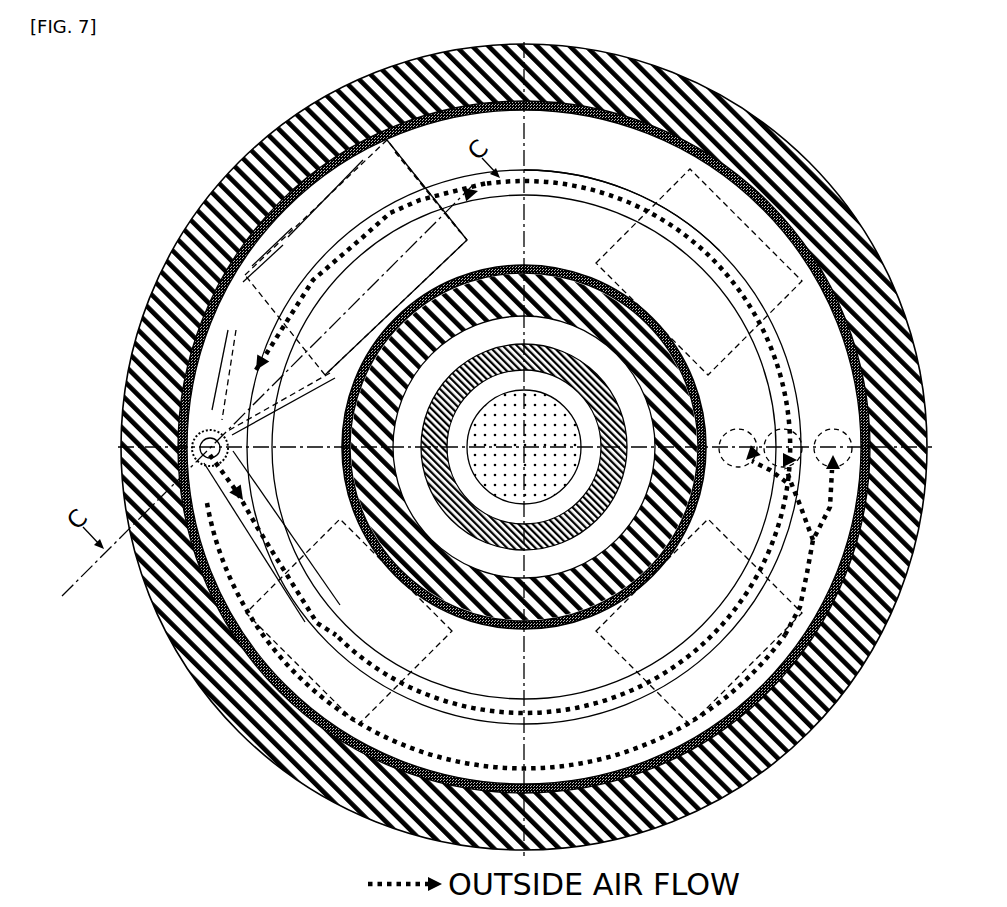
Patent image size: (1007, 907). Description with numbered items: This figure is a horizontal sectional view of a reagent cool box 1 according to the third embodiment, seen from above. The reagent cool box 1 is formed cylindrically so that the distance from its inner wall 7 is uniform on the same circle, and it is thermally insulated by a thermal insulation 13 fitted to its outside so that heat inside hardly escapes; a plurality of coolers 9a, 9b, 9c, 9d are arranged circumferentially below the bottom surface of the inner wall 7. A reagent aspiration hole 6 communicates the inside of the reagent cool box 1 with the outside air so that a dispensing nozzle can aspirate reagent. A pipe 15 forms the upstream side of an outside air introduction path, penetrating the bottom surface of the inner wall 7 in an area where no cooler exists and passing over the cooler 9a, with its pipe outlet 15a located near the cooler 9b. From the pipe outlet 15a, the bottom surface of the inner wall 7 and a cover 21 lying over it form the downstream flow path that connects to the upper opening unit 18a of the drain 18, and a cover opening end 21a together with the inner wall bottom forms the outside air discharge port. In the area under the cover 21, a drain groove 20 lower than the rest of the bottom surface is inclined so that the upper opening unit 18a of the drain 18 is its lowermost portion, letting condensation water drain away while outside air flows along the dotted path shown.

The reagent cool box 1 is at (531, 447).
The reagent aspiration hole 6 is at (742, 431).
The inner wall 7 is at (563, 447).
The cooler 9a is at (289, 270).
The cooler 9b is at (495, 479).
The cooler 9c is at (561, 622).
The cooler 9d is at (647, 148).
The thermal insulation 13 is at (477, 447).
The pipe 15 is at (433, 197).
The pipe outlet 15a is at (328, 160).
The drain 18 is at (127, 408).
The upper opening unit 18a is at (212, 565).
The drain groove 20 is at (213, 184).
The cover 21 is at (187, 203).
The cover opening end 21a is at (200, 551).